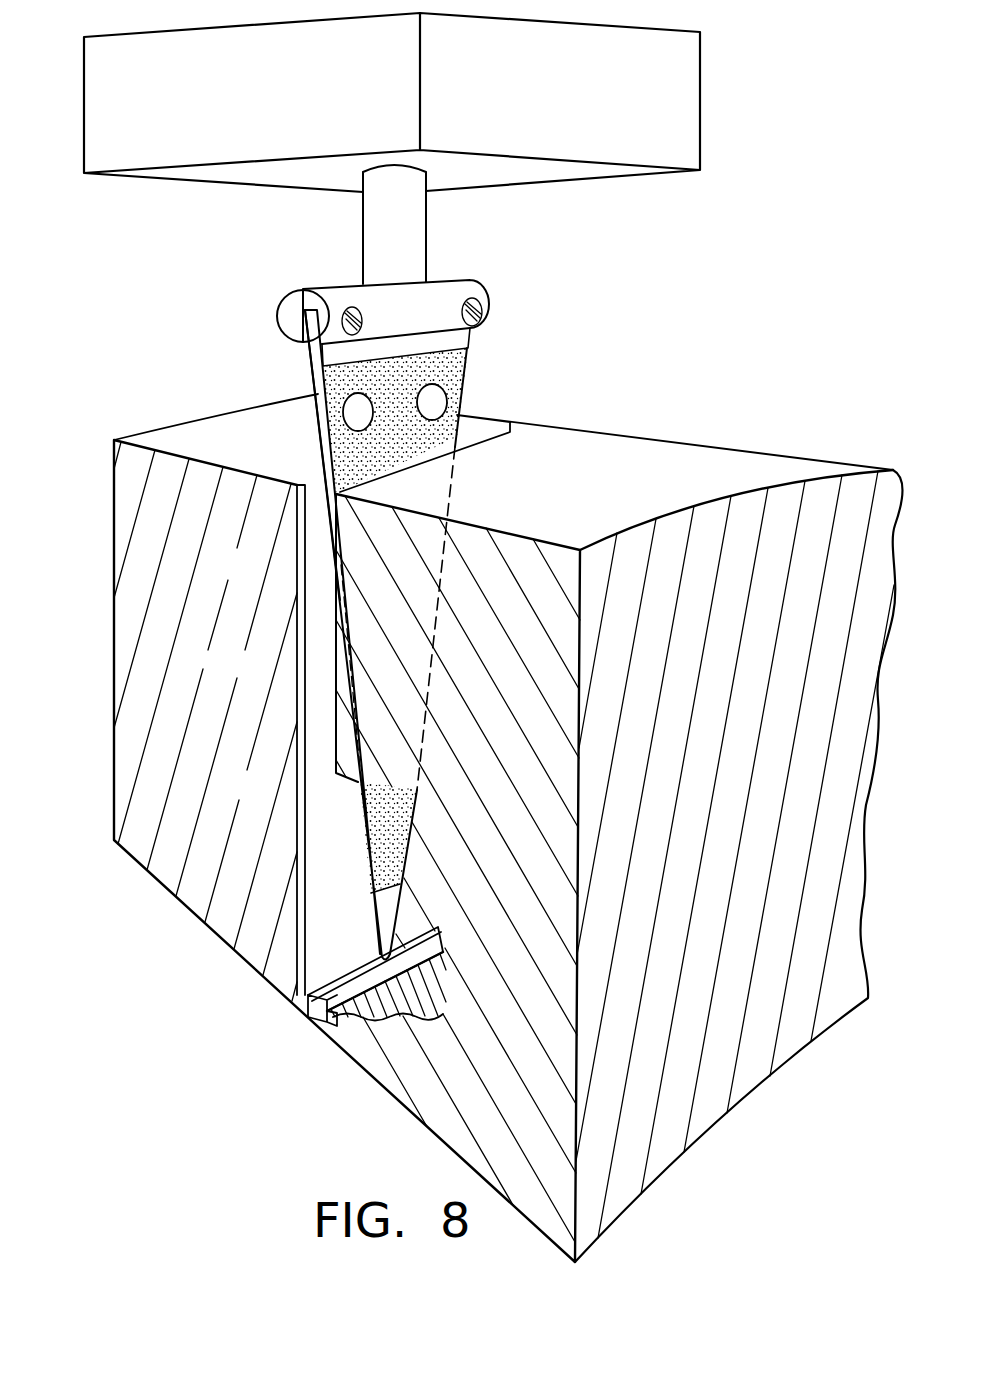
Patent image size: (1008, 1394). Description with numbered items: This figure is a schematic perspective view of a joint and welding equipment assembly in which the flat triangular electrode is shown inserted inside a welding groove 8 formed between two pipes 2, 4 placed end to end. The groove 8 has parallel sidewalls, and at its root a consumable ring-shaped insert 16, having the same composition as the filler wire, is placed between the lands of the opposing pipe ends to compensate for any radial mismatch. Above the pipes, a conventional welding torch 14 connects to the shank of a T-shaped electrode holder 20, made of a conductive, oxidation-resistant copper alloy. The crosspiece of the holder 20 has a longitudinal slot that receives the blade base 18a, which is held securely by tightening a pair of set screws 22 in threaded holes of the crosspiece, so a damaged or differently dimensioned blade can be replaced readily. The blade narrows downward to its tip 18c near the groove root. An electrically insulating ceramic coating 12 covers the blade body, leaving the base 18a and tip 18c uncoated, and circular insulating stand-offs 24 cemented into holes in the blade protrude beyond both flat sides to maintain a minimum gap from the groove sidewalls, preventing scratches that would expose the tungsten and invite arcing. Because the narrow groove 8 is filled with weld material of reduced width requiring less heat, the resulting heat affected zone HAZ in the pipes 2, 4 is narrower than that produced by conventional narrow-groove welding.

The pipe 2 is at (137, 742).
The pipe 4 is at (792, 465).
The groove 8 is at (305, 541).
The ceramic coating 12 is at (380, 835).
The welding torch 14 is at (700, 78).
The consumable ring-shaped insert 16 is at (308, 1030).
The base 18a is at (295, 356).
The tip 18c is at (367, 962).
The electrode holder 20 is at (472, 250).
The set screws 22 is at (487, 315).
The insulating stand-offs 24 is at (437, 402).
The heat affected zone HAZ is at (335, 650).